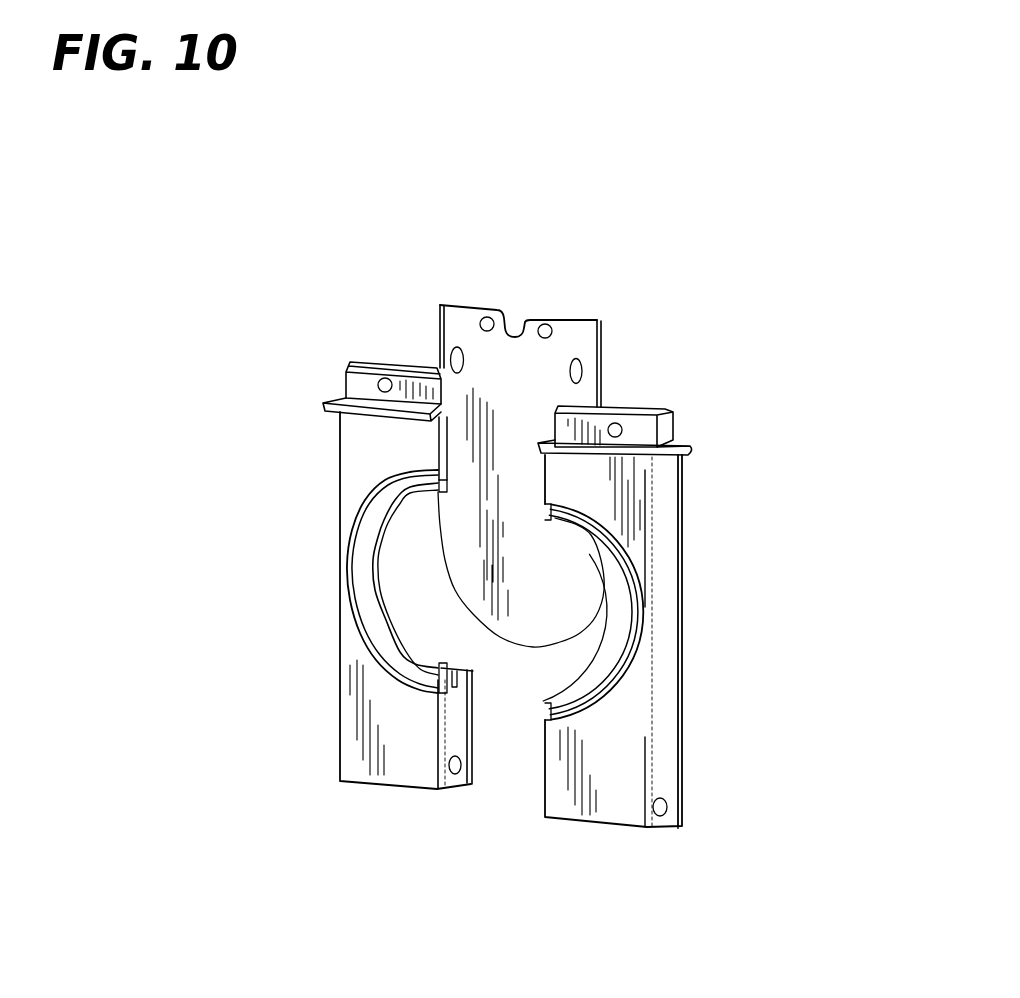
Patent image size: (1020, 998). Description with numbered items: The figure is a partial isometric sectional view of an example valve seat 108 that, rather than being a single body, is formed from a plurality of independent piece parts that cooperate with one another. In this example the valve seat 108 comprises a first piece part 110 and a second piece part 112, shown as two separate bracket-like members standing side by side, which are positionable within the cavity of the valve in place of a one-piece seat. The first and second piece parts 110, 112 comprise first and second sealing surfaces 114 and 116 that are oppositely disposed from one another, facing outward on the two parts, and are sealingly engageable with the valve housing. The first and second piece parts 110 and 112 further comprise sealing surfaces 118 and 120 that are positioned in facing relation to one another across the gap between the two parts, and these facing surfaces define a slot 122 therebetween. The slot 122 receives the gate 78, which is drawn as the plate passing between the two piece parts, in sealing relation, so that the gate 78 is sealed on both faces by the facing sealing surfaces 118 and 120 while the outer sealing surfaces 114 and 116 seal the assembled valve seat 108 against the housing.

The gate 78 is at (557, 342).
The valve seat 108 is at (776, 372).
The first piece part 110 is at (652, 753).
The second piece part 112 is at (340, 732).
The first sealing surface 114 is at (630, 555).
The second sealing surface 116 is at (368, 450).
The sealing surface 118 is at (370, 557).
The sealing surface 120 is at (378, 620).
The slot 122 is at (420, 639).